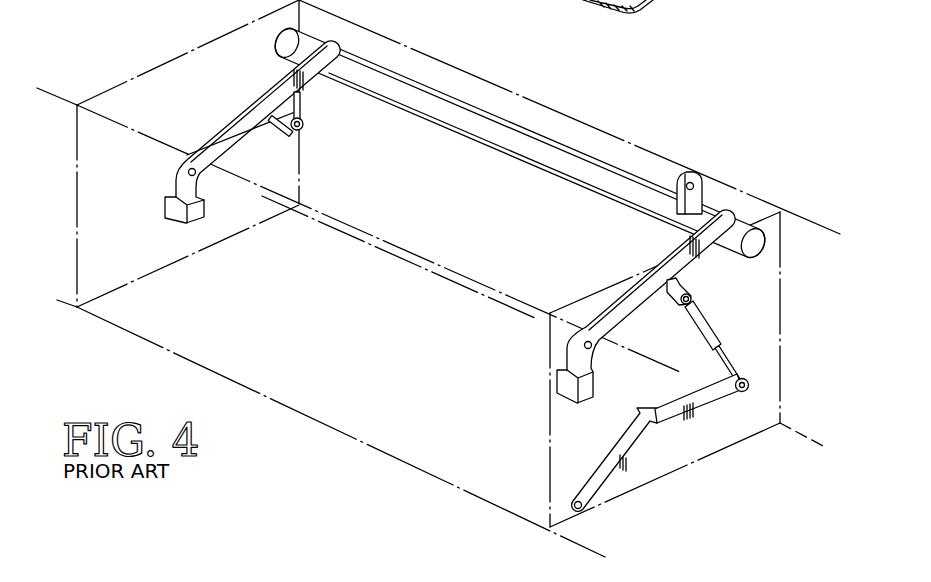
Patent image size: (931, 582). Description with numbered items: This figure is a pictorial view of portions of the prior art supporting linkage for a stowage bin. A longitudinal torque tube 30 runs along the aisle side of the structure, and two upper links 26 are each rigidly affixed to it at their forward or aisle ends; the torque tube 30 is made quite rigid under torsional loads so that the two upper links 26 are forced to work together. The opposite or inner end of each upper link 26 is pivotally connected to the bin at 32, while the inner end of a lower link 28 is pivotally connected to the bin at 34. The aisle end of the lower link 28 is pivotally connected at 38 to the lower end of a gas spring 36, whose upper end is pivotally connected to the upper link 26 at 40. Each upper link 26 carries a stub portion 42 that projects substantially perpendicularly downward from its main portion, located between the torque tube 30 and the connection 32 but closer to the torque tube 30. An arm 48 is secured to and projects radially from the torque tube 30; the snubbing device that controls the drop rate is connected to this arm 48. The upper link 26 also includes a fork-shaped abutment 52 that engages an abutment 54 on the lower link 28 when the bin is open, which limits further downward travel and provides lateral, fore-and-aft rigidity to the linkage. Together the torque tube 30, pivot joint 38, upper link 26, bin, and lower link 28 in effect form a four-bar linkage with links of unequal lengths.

The upper link 26 is at (222, 128).
The lower link 28 is at (643, 458).
The torque tube 30 is at (520, 125).
The pivotal connection 32 is at (574, 341).
The pivotal connection 34 is at (588, 509).
The gas spring 36 is at (716, 332).
The pivotal connection 38 is at (748, 382).
The pivotal connection 40 is at (302, 128).
The stub portion 42 is at (301, 114).
The arm 48 is at (698, 192).
The fork-shaped abutment 52 is at (190, 228).
The abutment 54 is at (662, 418).